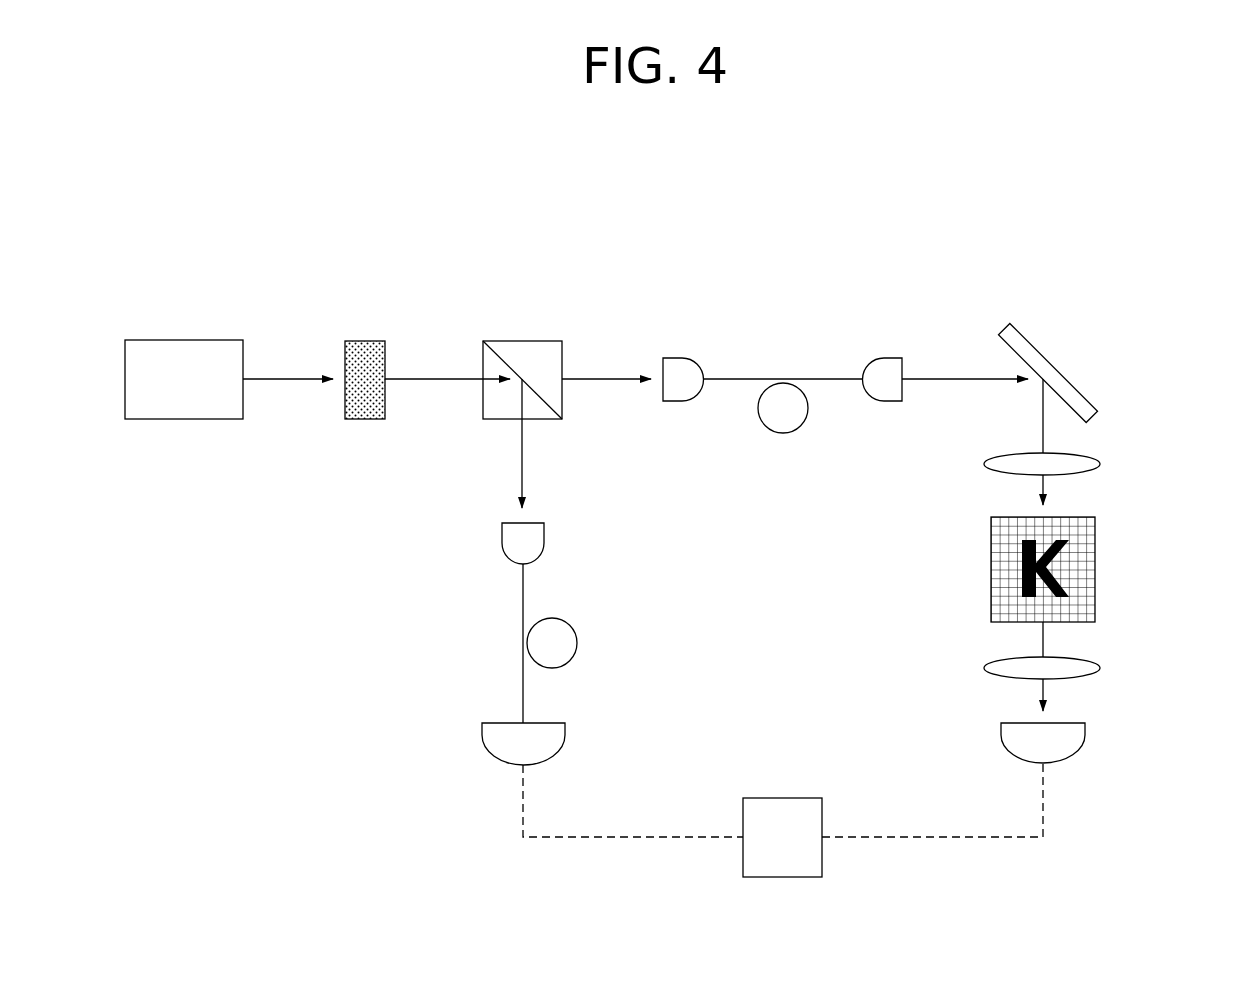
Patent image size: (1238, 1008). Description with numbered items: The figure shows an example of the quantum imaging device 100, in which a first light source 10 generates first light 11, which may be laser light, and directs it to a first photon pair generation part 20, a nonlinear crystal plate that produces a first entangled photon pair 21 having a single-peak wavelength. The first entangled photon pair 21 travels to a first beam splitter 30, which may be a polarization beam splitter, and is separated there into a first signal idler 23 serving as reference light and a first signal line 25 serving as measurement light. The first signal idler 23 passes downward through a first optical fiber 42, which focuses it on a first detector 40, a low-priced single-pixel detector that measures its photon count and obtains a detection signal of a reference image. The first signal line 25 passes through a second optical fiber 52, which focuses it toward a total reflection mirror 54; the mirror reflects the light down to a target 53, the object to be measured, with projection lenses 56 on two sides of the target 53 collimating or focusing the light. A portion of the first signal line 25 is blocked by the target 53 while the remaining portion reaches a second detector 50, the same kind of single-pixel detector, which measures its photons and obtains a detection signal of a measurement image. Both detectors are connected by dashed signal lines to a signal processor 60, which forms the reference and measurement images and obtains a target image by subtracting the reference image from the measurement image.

The quantum imaging device 100 is at (1003, 256).
The first light source 10 is at (208, 340).
The first light 11 is at (292, 378).
The first photon pair generation part 20 is at (367, 341).
The first entangled photon pair 21 is at (422, 378).
The first beam splitter 30 is at (530, 341).
The first signal idler 23 is at (522, 462).
The first signal line 25 is at (600, 378).
The first optical fiber 42 is at (578, 641).
The first detector 40 is at (566, 733).
The second optical fiber 52 is at (783, 433).
The total reflection mirror 54 is at (1055, 360).
The projection lenses 56 is at (1082, 455).
The target 53 is at (1097, 566).
The second detector 50 is at (1087, 729).
The signal processor 60 is at (805, 798).